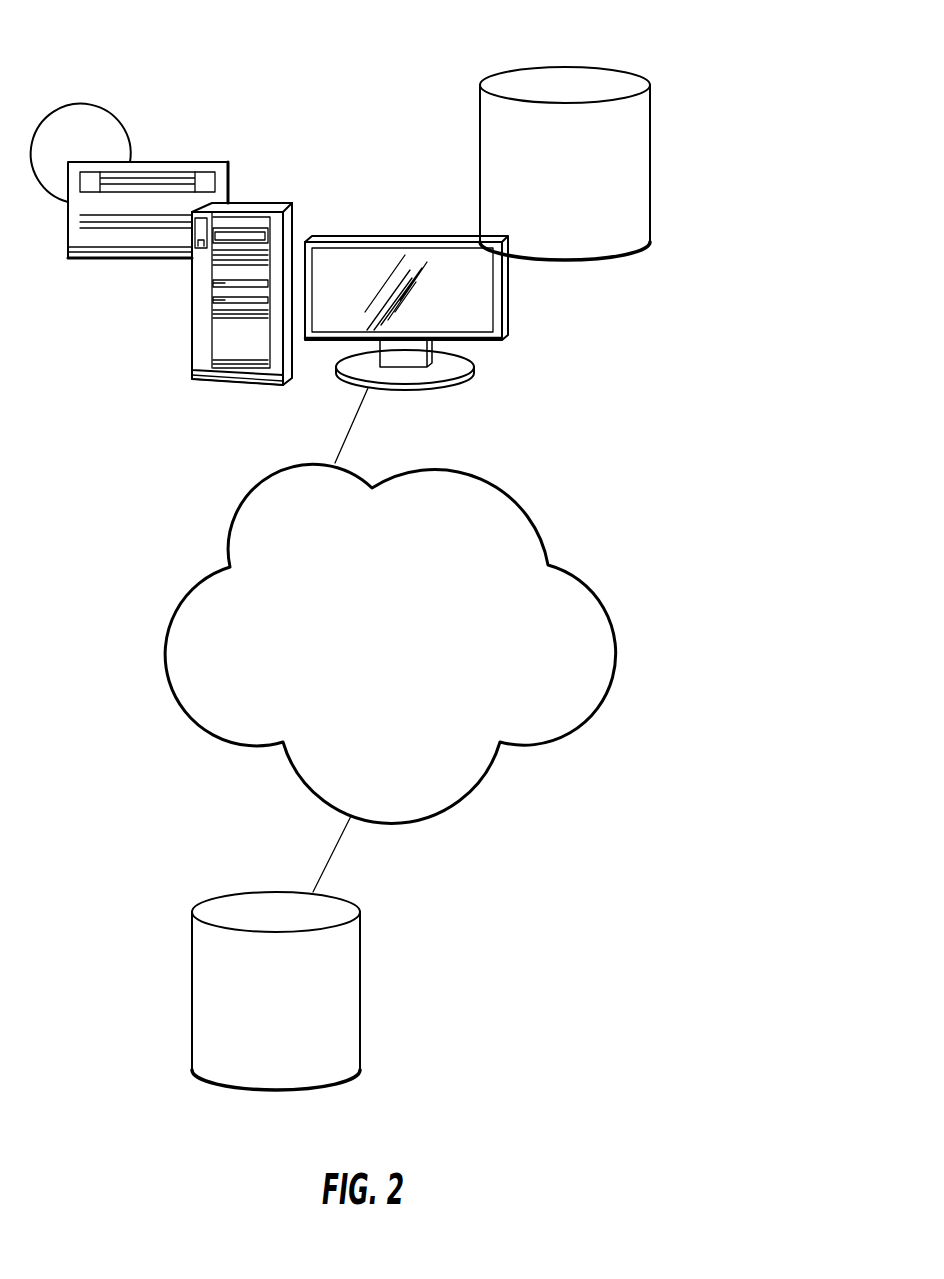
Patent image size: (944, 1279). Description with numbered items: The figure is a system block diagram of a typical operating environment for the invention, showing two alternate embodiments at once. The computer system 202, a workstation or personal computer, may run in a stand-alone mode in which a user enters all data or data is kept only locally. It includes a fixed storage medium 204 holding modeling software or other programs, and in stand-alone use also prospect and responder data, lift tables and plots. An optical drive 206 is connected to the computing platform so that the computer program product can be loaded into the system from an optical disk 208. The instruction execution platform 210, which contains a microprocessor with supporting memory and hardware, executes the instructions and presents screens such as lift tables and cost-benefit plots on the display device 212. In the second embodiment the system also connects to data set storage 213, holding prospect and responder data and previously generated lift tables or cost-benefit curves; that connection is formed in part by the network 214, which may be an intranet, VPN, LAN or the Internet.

The computer system 202 is at (752, 91).
The fixed storage medium 204 is at (553, 63).
The optical drive 206 is at (163, 160).
The optical disk 208 is at (73, 105).
The instruction execution platform 210 is at (223, 382).
The display device 212 is at (457, 367).
The data set storage 213 is at (362, 1027).
The network 214 is at (417, 757).